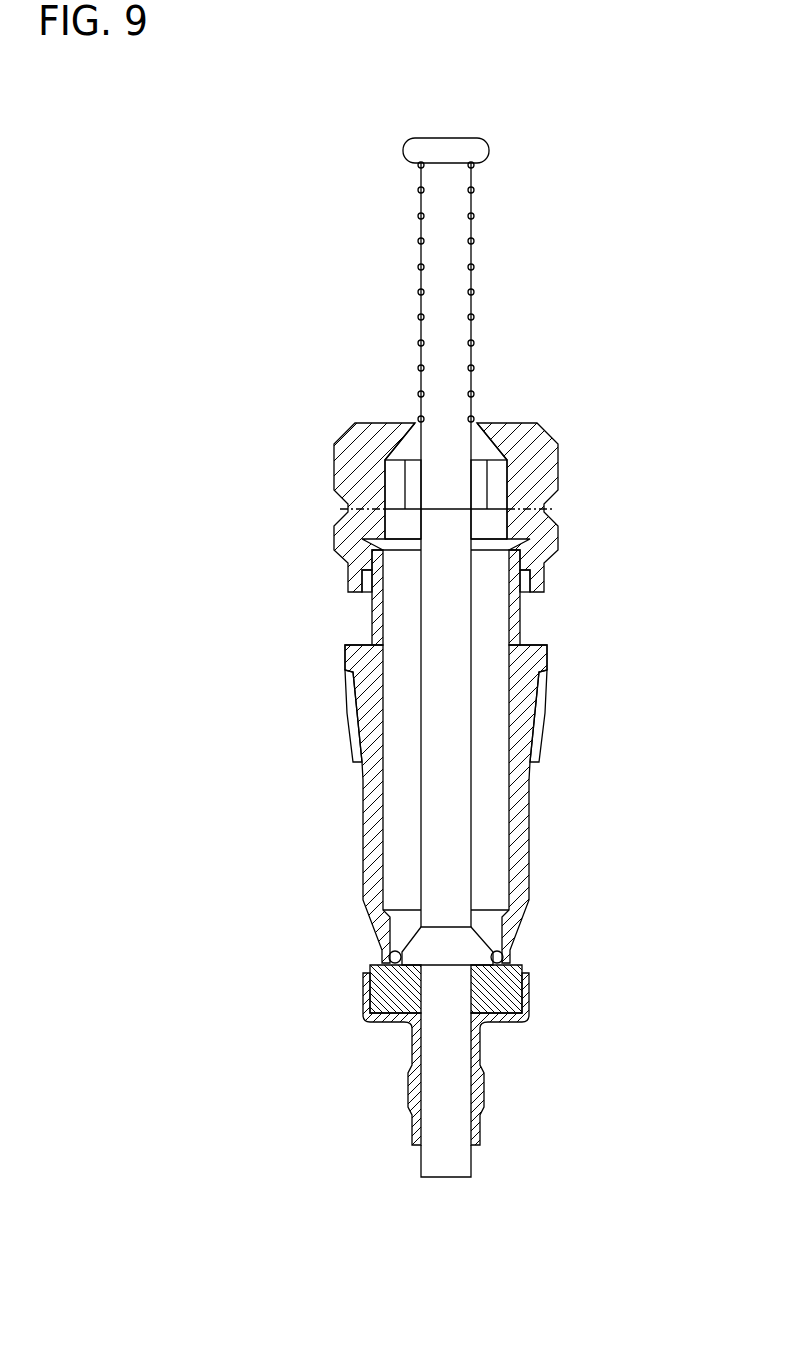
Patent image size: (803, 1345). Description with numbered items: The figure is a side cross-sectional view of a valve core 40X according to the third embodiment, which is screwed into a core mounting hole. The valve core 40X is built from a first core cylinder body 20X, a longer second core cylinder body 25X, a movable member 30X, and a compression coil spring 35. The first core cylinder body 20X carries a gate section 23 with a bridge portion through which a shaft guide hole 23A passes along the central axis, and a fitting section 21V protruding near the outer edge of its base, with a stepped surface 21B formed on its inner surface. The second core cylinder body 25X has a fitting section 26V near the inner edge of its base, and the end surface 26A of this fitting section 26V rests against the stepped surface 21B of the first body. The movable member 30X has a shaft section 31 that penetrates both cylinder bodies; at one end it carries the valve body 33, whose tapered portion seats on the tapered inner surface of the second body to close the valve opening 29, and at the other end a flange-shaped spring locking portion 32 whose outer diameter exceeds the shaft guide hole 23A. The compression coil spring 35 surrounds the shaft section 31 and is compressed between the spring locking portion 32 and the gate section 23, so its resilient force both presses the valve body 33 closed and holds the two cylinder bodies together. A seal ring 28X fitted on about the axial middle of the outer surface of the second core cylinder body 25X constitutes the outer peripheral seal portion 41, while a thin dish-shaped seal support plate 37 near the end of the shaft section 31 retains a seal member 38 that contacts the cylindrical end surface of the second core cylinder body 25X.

The valve core 40X is at (635, 280).
The movable member 30X is at (425, 132).
The shaft section 31 is at (448, 190).
The spring locking portion 32 is at (478, 150).
The compression coil spring 35 is at (473, 205).
The first core cylinder body 20X is at (556, 440).
The gate section 23 is at (527, 482).
The shaft guide hole 23A is at (478, 436).
The stepped surface 21B is at (536, 526).
The fitting section 21V is at (534, 567).
The end surface 26A is at (528, 534).
The second core cylinder body 25X is at (535, 808).
The fitting section 26V is at (518, 608).
The outer peripheral seal portion 41 is at (548, 688).
The seal ring 28X is at (546, 728).
The valve opening 29 is at (386, 948).
The valve body 33 is at (465, 948).
The seal member 38 is at (525, 990).
The seal support plate 37 is at (533, 1012).